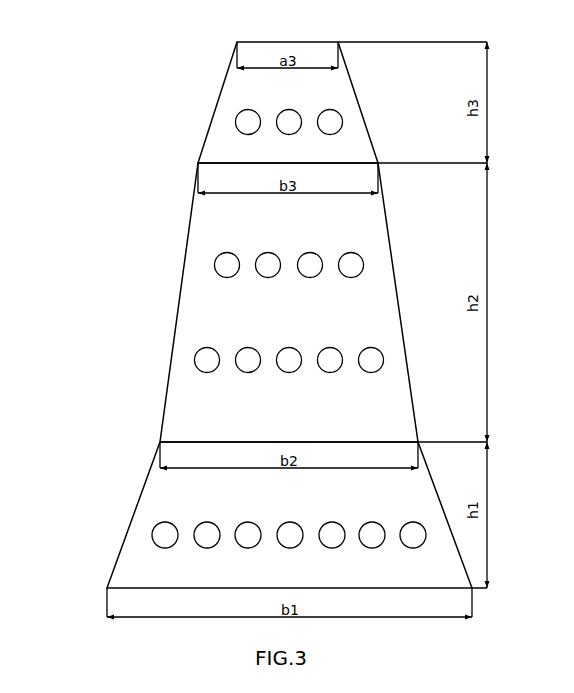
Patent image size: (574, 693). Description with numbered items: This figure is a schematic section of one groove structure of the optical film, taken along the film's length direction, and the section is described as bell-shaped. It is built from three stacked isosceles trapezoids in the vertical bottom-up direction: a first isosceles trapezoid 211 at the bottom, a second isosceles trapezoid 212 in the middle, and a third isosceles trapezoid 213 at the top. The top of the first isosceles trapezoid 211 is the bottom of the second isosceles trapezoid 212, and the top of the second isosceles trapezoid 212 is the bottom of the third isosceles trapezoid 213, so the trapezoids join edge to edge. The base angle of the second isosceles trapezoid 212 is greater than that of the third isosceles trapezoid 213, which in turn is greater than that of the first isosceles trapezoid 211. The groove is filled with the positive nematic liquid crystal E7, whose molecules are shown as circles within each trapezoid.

The first isosceles trapezoid 211 is at (133, 572).
The second isosceles trapezoid 212 is at (190, 317).
The third isosceles trapezoid 213 is at (225, 120).
The positive nematic liquid crystal E7 is at (284, 118).